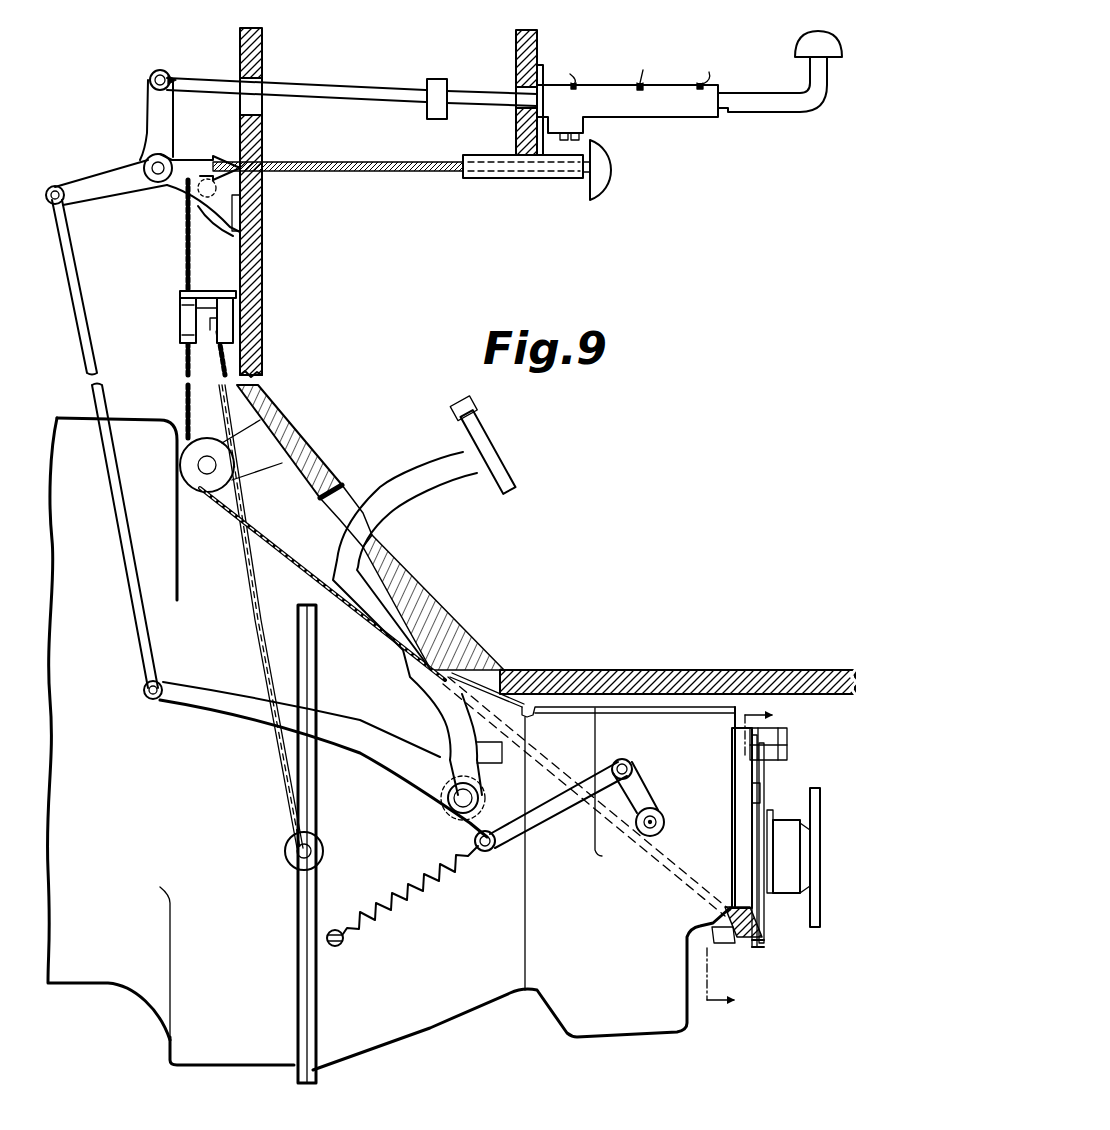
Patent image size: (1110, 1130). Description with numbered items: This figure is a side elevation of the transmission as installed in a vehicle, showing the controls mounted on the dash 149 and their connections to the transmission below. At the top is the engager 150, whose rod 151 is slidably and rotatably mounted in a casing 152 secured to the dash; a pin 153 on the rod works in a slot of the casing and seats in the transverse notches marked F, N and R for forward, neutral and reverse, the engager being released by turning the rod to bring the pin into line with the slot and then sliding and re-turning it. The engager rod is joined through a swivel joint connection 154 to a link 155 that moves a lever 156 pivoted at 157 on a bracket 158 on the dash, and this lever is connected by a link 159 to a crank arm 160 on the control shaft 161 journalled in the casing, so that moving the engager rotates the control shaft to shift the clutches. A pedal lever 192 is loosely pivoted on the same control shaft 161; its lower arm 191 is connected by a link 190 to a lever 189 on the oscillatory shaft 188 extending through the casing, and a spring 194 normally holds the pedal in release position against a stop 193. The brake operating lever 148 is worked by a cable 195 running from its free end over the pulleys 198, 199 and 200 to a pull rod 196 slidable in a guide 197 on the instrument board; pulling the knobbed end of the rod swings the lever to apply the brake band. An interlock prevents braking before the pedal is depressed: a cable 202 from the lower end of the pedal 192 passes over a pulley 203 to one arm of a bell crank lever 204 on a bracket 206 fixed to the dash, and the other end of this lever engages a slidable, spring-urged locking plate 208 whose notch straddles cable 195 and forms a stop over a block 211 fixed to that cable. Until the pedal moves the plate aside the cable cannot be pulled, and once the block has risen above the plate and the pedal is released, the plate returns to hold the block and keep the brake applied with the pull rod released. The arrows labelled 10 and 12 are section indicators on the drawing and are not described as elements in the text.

The support post 10 is at (182, 280).
The section line 12 is at (755, 859).
The brake operating lever 148 is at (772, 822).
The dash 149 is at (298, 455).
The engager 150 is at (627, 112).
The rod 151 is at (772, 104).
The casing 152 is at (688, 112).
The pin 153 is at (635, 84).
The swivel joint connection 154 is at (437, 78).
The link 155 is at (355, 62).
The lever 156 is at (145, 114).
The pivot 157 is at (146, 166).
The bracket 158 is at (188, 172).
The link 159 is at (120, 540).
The crank arm 160 is at (203, 715).
The control shaft 161 is at (448, 806).
The oscillatory shaft 188 is at (664, 822).
The lever 189 is at (636, 796).
The link 190 is at (556, 814).
The lower arm 191 is at (488, 830).
The pedal lever 192 is at (430, 495).
The stop 193 is at (490, 752).
The spring 194 is at (400, 910).
The cable 195 is at (287, 556).
The pull rod 196 is at (415, 172).
The guide 197 is at (522, 180).
The pulley 198 is at (738, 945).
The pulley 199 is at (200, 488).
The pulley 200 is at (207, 212).
The cable 202 is at (252, 648).
The pulley 203 is at (286, 856).
The bell crank lever 204 is at (180, 308).
The bracket 206 is at (240, 312).
The locking plate 208 is at (216, 290).
The block 211 is at (180, 322).